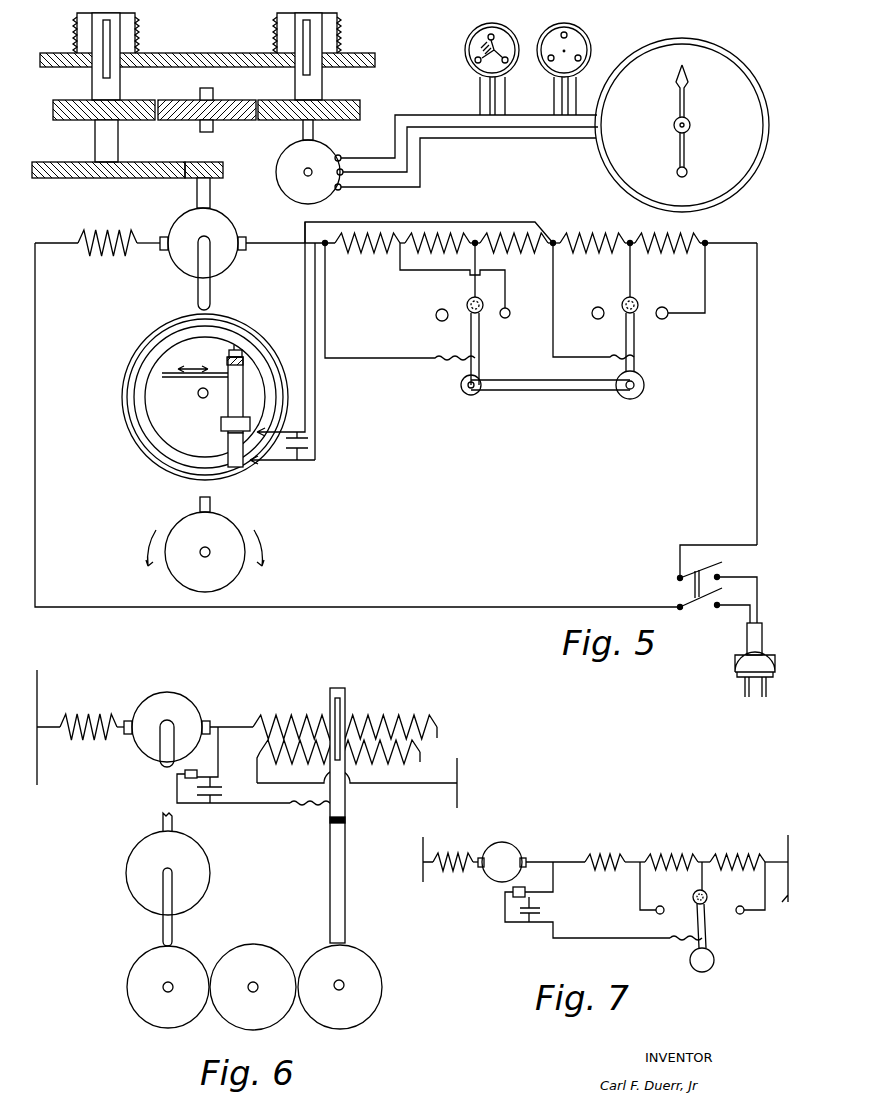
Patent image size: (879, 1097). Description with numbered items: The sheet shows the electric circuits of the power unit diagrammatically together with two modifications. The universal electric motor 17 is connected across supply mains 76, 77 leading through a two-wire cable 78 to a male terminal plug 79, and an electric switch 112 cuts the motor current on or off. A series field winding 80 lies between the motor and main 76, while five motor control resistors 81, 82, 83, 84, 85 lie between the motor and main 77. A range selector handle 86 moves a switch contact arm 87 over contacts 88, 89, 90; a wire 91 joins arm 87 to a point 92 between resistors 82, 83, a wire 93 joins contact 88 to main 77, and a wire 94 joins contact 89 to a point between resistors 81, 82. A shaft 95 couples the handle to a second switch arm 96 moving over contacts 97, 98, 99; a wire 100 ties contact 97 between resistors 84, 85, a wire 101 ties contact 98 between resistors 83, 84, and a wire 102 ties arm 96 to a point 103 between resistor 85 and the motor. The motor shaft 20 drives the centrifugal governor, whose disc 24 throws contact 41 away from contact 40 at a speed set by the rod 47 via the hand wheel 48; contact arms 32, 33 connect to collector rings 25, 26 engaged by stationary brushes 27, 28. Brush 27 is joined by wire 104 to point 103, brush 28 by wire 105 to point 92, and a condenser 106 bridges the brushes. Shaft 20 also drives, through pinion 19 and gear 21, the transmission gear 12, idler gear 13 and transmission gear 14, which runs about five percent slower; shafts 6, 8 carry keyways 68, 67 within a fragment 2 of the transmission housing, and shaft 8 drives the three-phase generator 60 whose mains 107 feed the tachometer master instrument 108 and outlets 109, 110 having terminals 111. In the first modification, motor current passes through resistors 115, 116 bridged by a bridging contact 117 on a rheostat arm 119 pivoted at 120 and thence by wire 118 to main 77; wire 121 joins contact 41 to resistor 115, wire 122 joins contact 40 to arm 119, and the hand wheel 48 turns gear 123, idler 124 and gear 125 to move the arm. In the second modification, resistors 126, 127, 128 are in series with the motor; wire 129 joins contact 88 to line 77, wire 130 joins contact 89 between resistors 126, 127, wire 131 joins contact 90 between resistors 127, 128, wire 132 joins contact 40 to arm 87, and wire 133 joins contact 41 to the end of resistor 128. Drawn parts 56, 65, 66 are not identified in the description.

In FIG. 5, the fragment of transmission housing 2 is at (205, 53).
In FIG. 5, the shaft 6 is at (98, 88).
In FIG. 5, the shaft 8 is at (318, 80).
In FIG. 5, the transmission gear 12 is at (130, 104).
In FIG. 5, the idler gear 13 is at (232, 104).
In FIG. 5, the transmission gear 14 is at (342, 102).
In FIG. 5, the electric motor 17 is at (232, 258).
In FIG. 6, the electric motor 17 is at (180, 706).
In FIG. 7, the electric motor 17 is at (512, 850).
In FIG. 5, the pinion 19 is at (212, 163).
In FIG. 5, the motor shaft 20 is at (210, 192).
In FIG. 5, the gear 21 is at (140, 165).
In FIG. 5, the disc 24 is at (205, 397).
In FIG. 5, the collector ring 25 is at (134, 424).
In FIG. 5, the collector ring 26 is at (160, 428).
In FIG. 5, the stationary brush 27 is at (276, 466).
In FIG. 5, the stationary brush 28 is at (288, 432).
In FIG. 5, the contact arm 32 is at (228, 406).
In FIG. 5, the contact arm 33 is at (244, 396).
In FIG. 5, the contact 40 is at (228, 354).
In FIG. 6, the contact 40 is at (233, 788).
In FIG. 7, the contact 40 is at (510, 892).
In FIG. 5, the contact 41 is at (232, 348).
In FIG. 6, the contact 41 is at (196, 766).
In FIG. 7, the contact 41 is at (527, 884).
In FIG. 5, the rod 47 is at (188, 378).
In FIG. 5, the hand wheel 48 is at (209, 544).
In FIG. 6, the hand wheel 48 is at (206, 874).
In FIG. 5, the arrow 56 is at (194, 364).
In FIG. 5, the electric generator 60 is at (286, 152).
In FIG. 5, the nut 65 is at (338, 20).
In FIG. 5, the nut 66 is at (137, 22).
In FIG. 5, the keyway 67 is at (312, 38).
In FIG. 5, the keyway 68 is at (110, 42).
In FIG. 5, the supply main 76 is at (36, 374).
In FIG. 6, the supply main 76 is at (38, 768).
In FIG. 7, the supply main 76 is at (424, 850).
In FIG. 5, the supply main 77 is at (758, 408).
In FIG. 6, the supply main 77 is at (458, 766).
In FIG. 7, the supply main 77 is at (780, 876).
In FIG. 5, the two-wire cable 78 is at (763, 632).
In FIG. 5, the male terminal plug 79 is at (764, 664).
In FIG. 5, the series field winding 80 is at (100, 256).
In FIG. 6, the series field winding 80 is at (95, 740).
In FIG. 7, the series field winding 80 is at (455, 862).
In FIG. 5, the motor control resistor 81 is at (688, 254).
In FIG. 5, the motor control resistor 82 is at (606, 254).
In FIG. 5, the motor control resistor 83 is at (525, 251).
In FIG. 5, the motor control resistor 84 is at (450, 254).
In FIG. 5, the motor control resistor 85 is at (372, 251).
In FIG. 5, the range selector handle 86 is at (646, 382).
In FIG. 7, the range selector handle 86 is at (714, 962).
In FIG. 5, the switch contact arm 87 is at (636, 362).
In FIG. 7, the switch contact arm 87 is at (707, 944).
In FIG. 5, the contact 88 is at (662, 319).
In FIG. 7, the contact 88 is at (744, 909).
In FIG. 5, the contact 89 is at (624, 299).
In FIG. 7, the contact 89 is at (707, 896).
In FIG. 5, the contact 90 is at (592, 312).
In FIG. 7, the contact 90 is at (660, 906).
In FIG. 5, the wire 91 is at (556, 270).
In FIG. 5, the point 92 is at (556, 238).
In FIG. 5, the wire 93 is at (706, 270).
In FIG. 5, the wire 94 is at (632, 266).
In FIG. 5, the shaft 95 is at (548, 382).
In FIG. 5, the second switch arm 96 is at (480, 364).
In FIG. 5, the contact 97 is at (511, 315).
In FIG. 5, the contact 98 is at (488, 297).
In FIG. 5, the contact 99 is at (437, 317).
In FIG. 5, the wire 100 is at (426, 272).
In FIG. 5, the wire 101 is at (477, 256).
In FIG. 5, the wire 102 is at (396, 360).
In FIG. 5, the point 103 is at (328, 250).
In FIG. 5, the wire 104 is at (316, 400).
In FIG. 5, the wire 105 is at (304, 304).
In FIG. 5, the condenser 106 is at (310, 444).
In FIG. 6, the condenser 106 is at (223, 792).
In FIG. 7, the condenser 106 is at (541, 912).
In FIG. 5, the supply mains 107 is at (367, 158).
In FIG. 5, the electric tachometer master instrument 108 is at (682, 125).
In FIG. 5, the three-phase outlet 109 is at (508, 30).
In FIG. 5, the three-phase outlet 110 is at (584, 30).
In FIG. 5, the sleeve type terminals 111 is at (482, 49).
In FIG. 5, the electric switch 112 is at (686, 588).
In FIG. 6, the resistor 115 is at (294, 712).
In FIG. 6, the resistor 116 is at (294, 746).
In FIG. 6, the bridging contact 117 is at (340, 702).
In FIG. 6, the wire 118 is at (402, 785).
In FIG. 6, the rheostat arm 119 is at (346, 820).
In FIG. 6, the pivot 120 is at (342, 980).
In FIG. 6, the wire 121 is at (219, 754).
In FIG. 6, the wire 122 is at (240, 806).
In FIG. 6, the wheel or gear 123 is at (186, 946).
In FIG. 6, the idler 124 is at (258, 944).
In FIG. 6, the wheel or gear 125 is at (380, 978).
In FIG. 7, the resistor 126 is at (732, 856).
In FIG. 7, the resistor 127 is at (674, 856).
In FIG. 7, the resistor 128 is at (602, 856).
In FIG. 7, the wire 129 is at (758, 914).
In FIG. 7, the wire 130 is at (703, 874).
In FIG. 7, the wire 131 is at (641, 878).
In FIG. 7, the wire 132 is at (596, 938).
In FIG. 7, the wire 133 is at (554, 880).